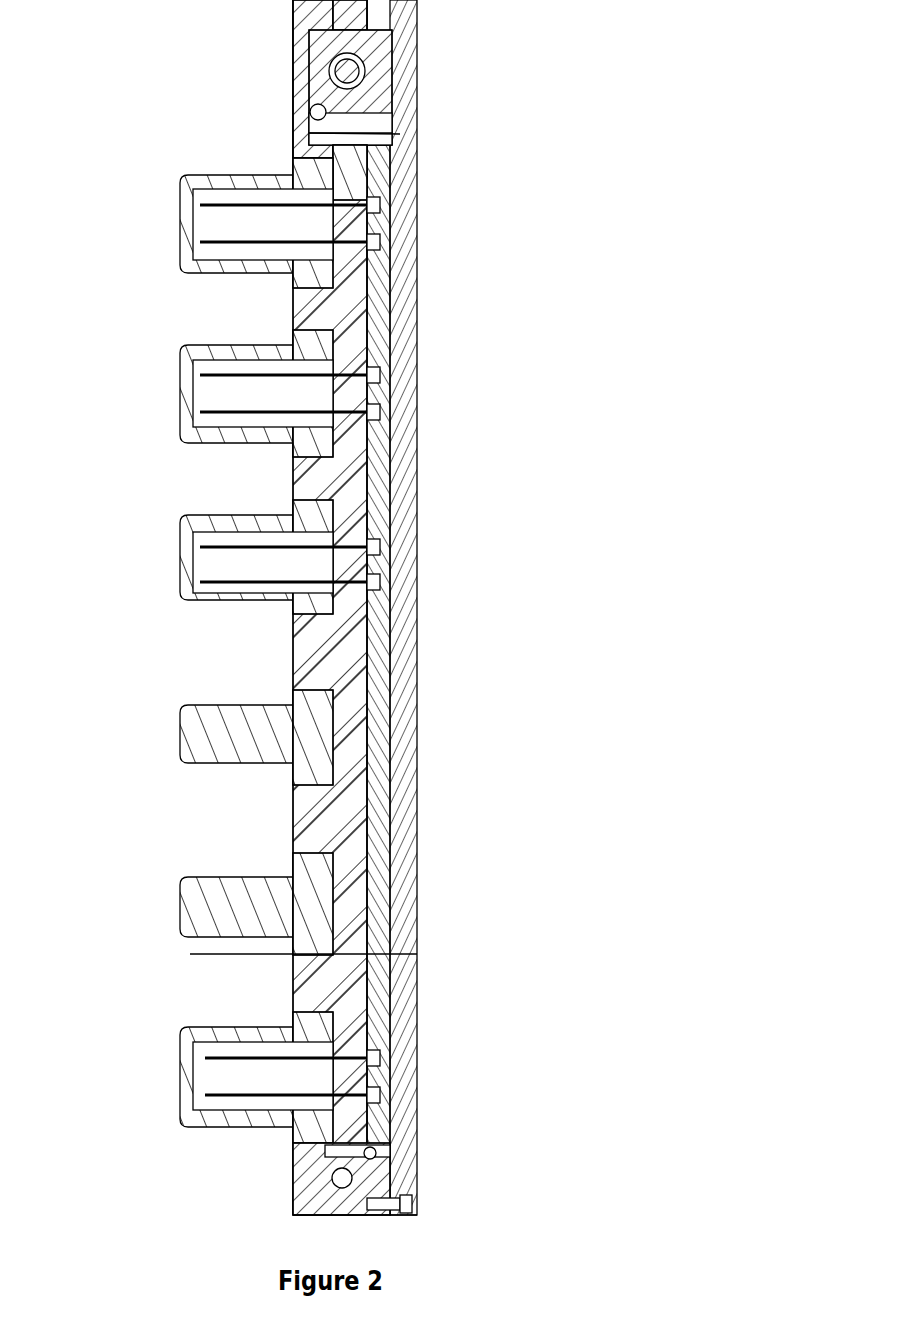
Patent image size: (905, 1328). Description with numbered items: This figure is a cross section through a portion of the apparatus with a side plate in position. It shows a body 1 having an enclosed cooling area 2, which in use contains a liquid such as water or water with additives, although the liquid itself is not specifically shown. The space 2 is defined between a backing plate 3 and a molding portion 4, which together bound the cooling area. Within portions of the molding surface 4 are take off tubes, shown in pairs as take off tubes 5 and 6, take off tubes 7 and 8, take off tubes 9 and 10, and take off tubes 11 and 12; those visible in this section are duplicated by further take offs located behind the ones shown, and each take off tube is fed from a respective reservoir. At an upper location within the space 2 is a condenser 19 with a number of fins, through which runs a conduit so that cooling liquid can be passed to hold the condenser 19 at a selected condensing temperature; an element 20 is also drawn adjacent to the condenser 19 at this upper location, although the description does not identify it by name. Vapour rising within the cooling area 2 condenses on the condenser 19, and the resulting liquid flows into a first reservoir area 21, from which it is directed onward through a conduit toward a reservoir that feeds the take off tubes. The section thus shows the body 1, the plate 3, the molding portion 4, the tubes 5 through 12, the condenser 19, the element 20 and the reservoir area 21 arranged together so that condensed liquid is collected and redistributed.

The body 1 is at (350, 990).
The enclosed cooling area 2 is at (390, 823).
The backing plate 3 is at (410, 792).
The molding portion 4 is at (218, 752).
The take off tube 5 is at (205, 1058).
The take off tube 6 is at (205, 1095).
The take off tube 7 is at (200, 582).
The take off tube 8 is at (200, 548).
The take off tube 9 is at (200, 413).
The take off tube 10 is at (200, 376).
The take off tube 11 is at (200, 243).
The take off tube 12 is at (200, 205).
The condenser 19 is at (380, 65).
The fastening screw 20 is at (340, 70).
The first reservoir area 21 is at (400, 134).